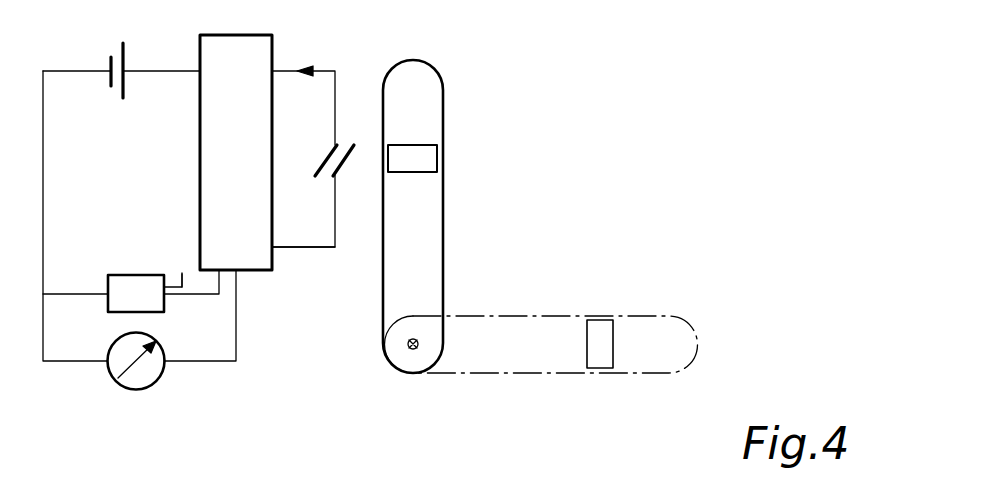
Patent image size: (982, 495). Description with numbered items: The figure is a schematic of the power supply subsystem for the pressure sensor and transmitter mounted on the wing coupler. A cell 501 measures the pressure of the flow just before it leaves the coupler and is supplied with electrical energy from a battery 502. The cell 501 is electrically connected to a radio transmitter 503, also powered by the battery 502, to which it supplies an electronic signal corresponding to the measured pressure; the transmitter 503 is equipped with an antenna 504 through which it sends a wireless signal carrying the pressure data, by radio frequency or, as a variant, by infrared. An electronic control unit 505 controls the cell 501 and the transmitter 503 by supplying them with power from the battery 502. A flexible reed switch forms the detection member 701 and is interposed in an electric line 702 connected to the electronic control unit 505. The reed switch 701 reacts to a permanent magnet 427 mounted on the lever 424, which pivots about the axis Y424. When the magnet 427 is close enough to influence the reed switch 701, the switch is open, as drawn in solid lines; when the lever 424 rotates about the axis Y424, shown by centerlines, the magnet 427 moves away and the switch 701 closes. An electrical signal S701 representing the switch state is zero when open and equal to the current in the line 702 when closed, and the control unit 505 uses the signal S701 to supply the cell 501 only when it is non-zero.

The cell 501 is at (145, 377).
The battery 502 is at (117, 52).
The radio transmitter 503 is at (136, 293).
The antenna 504 is at (182, 274).
The electronic control unit 505 is at (236, 152).
The detection member 701 is at (314, 160).
The electrical signal S701 is at (304, 94).
The electric line 702 is at (302, 248).
The lever 424 is at (425, 232).
The permanent magnet 427 is at (415, 148).
The axis Y424 is at (409, 346).